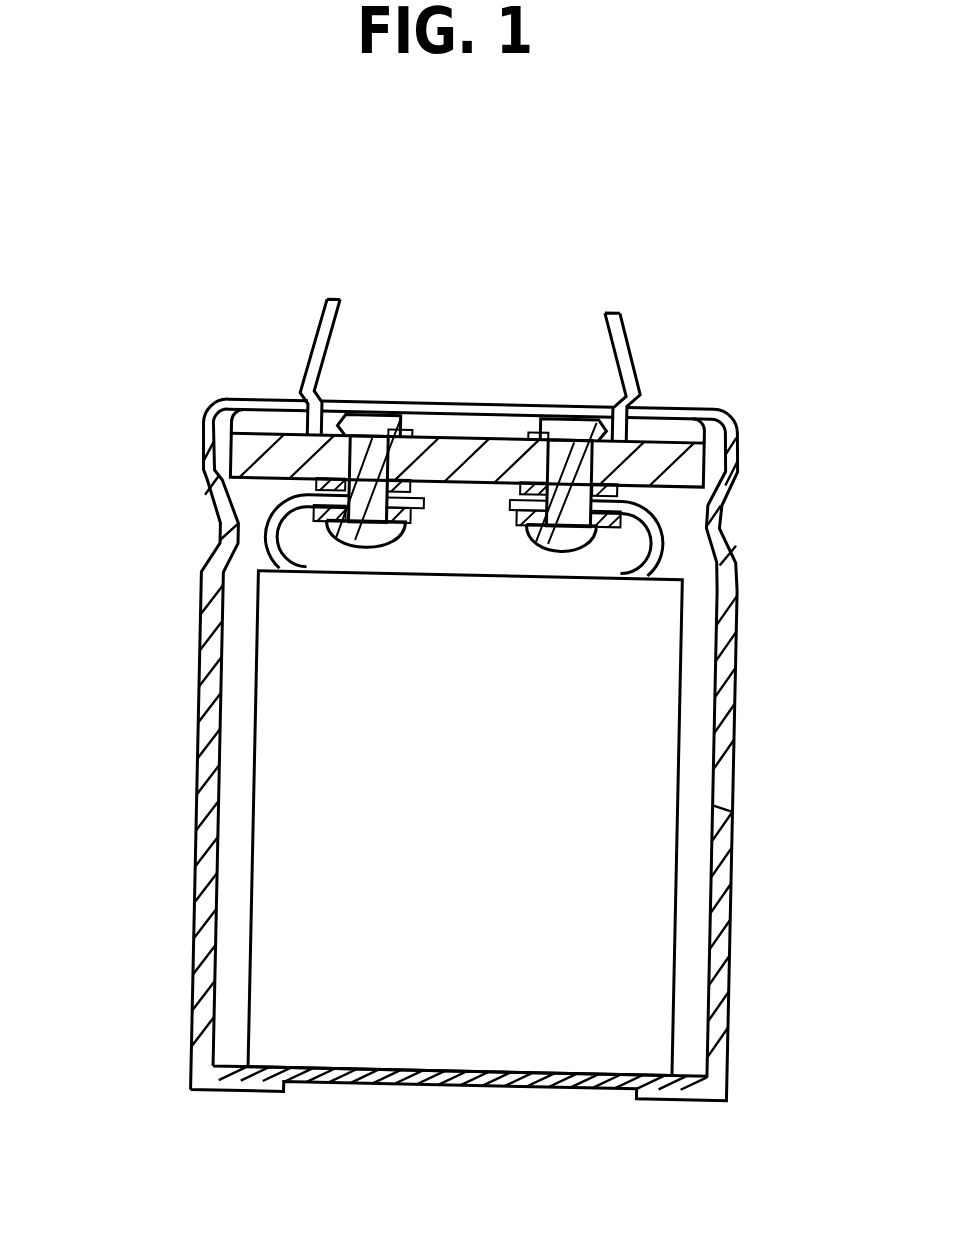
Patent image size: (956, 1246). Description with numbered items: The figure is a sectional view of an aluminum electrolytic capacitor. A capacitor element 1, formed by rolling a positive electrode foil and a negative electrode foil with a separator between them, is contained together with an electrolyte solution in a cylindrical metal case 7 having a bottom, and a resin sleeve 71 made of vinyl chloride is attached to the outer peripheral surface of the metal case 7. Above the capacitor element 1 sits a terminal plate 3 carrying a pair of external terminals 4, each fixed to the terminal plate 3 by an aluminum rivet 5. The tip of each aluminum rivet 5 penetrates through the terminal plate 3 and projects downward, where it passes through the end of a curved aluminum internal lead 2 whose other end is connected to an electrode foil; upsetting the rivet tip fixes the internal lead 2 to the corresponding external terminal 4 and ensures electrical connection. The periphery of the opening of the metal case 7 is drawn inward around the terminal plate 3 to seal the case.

The capacitor element 1 is at (647, 893).
The internal lead 2 is at (267, 548).
The terminal plate 3 is at (267, 457).
The external terminal 4 is at (318, 328).
The aluminum rivet 5 is at (548, 422).
The metal case 7 is at (453, 750).
The resin sleeve 71 is at (198, 922).